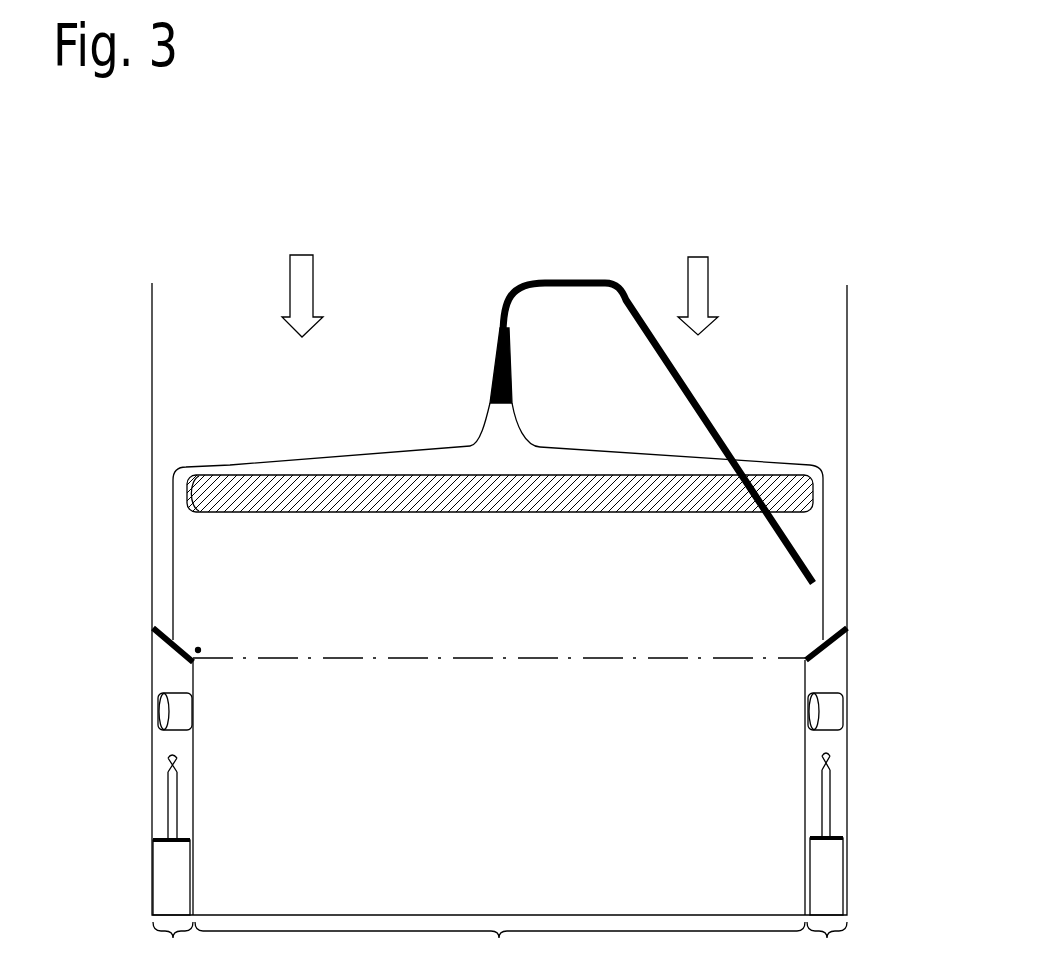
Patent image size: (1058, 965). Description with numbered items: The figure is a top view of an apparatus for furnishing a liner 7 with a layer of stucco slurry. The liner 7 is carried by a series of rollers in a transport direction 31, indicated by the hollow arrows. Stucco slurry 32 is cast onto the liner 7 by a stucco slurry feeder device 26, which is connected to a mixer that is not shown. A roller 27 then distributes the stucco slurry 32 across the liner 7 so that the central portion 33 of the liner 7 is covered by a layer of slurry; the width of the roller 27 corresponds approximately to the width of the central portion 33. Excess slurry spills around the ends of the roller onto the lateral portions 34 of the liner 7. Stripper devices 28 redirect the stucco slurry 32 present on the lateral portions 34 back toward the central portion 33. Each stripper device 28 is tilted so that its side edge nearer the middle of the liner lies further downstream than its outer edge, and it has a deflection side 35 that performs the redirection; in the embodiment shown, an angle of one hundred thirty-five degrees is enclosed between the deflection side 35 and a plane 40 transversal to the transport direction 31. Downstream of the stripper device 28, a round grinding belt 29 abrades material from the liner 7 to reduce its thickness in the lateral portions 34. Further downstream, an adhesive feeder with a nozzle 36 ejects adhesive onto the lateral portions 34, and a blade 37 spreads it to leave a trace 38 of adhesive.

The liner 7 is at (786, 340).
The stucco slurry feeder device 26 is at (508, 345).
The roller 27 is at (813, 477).
The stripper device 28 is at (213, 652).
The round grinding belt 29 is at (156, 705).
The transport direction 31 is at (698, 273).
The stucco slurry 32 is at (512, 457).
The central portion 33 is at (500, 943).
The lateral portions 34 is at (500, 943).
The deflection side 35 is at (213, 655).
The nozzle 36 is at (168, 757).
The blade 37 is at (160, 838).
The trace of adhesive 38 is at (170, 878).
The plane transversal to the transport direction 40 is at (500, 658).